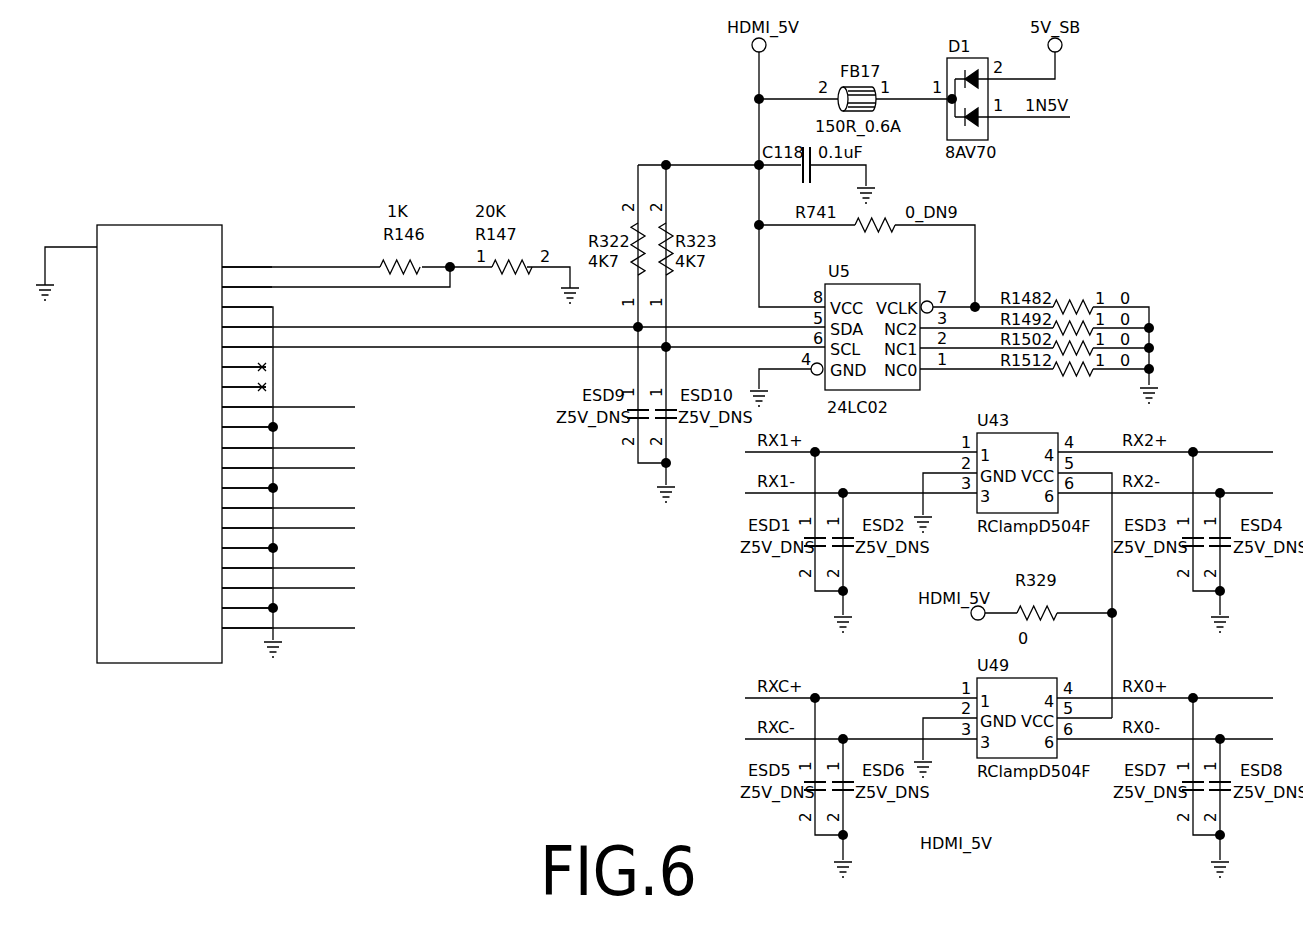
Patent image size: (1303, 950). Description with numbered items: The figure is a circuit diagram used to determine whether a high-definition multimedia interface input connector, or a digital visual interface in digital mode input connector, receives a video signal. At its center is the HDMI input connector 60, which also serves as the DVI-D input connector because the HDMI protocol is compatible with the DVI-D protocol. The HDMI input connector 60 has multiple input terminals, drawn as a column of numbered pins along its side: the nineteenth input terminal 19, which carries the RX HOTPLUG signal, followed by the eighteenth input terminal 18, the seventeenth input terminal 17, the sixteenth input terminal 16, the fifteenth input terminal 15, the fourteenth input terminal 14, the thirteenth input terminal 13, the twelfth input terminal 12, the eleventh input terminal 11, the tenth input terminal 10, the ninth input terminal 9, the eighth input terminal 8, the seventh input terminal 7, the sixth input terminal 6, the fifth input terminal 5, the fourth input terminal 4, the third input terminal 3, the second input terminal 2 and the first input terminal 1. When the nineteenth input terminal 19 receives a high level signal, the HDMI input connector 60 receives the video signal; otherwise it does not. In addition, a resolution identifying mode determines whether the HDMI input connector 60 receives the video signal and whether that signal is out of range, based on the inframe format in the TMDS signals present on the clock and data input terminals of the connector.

The HDMI input connector 60 is at (180, 237).
The connector pin 19 (HF DET) 19 is at (247, 259).
The connector pin 18 (+5V) 18 is at (247, 279).
The connector pin 17 (GND) 17 is at (247, 299).
The connector pin 16 (DDC DATA) 16 is at (247, 319).
The connector pin 15 (DDC CLK) 15 is at (247, 339).
The connector pin 14 (NC) 14 is at (244, 359).
The connector pin 13 (CE Remote) 13 is at (244, 379).
The connector pin 12 (CK-) 12 is at (247, 399).
The connector pin 11 (CK Shield) 11 is at (247, 419).
The connector pin 10 (CK+) 10 is at (247, 440).
The connector pin 9 (D0-) 9 is at (247, 460).
The connector pin 8 (D0 Shield) 8 is at (247, 480).
The connector pin 7 (D0+) 7 is at (247, 500).
The connector pin 6 (D1-) 6 is at (247, 520).
The connector pin 5 (D1 Shield) 5 is at (247, 540).
The connector pin 4 (D1+) 4 is at (247, 560).
The connector pin 3 (D2-) 3 is at (247, 580).
The connector pin 2 (D2 Shield) 2 is at (247, 600).
The connector pin 1 (D2+) 1 is at (247, 620).